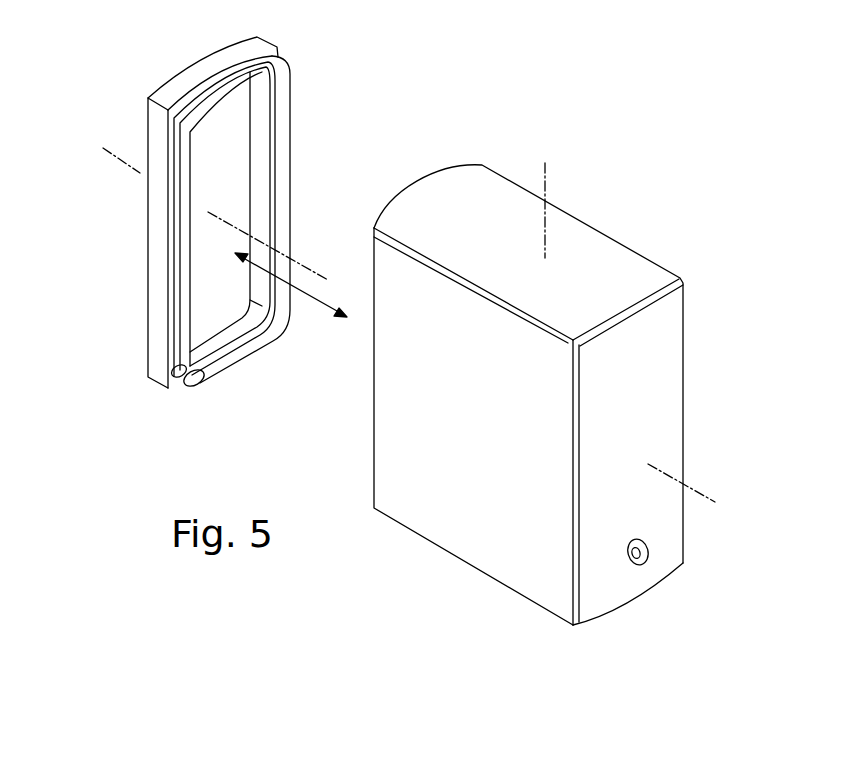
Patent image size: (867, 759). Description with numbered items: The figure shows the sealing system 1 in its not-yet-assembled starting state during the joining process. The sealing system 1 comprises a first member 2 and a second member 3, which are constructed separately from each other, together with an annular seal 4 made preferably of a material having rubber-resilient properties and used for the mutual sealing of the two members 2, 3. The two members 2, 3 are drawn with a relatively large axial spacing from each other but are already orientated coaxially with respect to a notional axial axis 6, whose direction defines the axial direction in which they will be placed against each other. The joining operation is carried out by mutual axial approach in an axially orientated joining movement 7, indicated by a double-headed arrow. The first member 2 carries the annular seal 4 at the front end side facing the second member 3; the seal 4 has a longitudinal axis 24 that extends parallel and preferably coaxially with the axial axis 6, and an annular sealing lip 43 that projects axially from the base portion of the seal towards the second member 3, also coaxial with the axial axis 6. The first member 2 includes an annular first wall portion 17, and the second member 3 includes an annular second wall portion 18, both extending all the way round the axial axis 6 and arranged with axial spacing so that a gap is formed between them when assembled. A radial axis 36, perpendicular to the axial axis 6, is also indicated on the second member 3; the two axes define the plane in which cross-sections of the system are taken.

The sealing system 1 is at (388, 332).
The first member 2 is at (215, 213).
The second member 3 is at (519, 397).
The annular seal 4 is at (269, 223).
The axial axis 6 is at (288, 240).
The longitudinal axis 24 is at (309, 268).
The joining movement 7 is at (315, 299).
The first wall portion 17 is at (257, 148).
The second wall portion 18 is at (378, 383).
The radial axis 36 is at (548, 170).
The annular sealing lip 43 is at (285, 178).